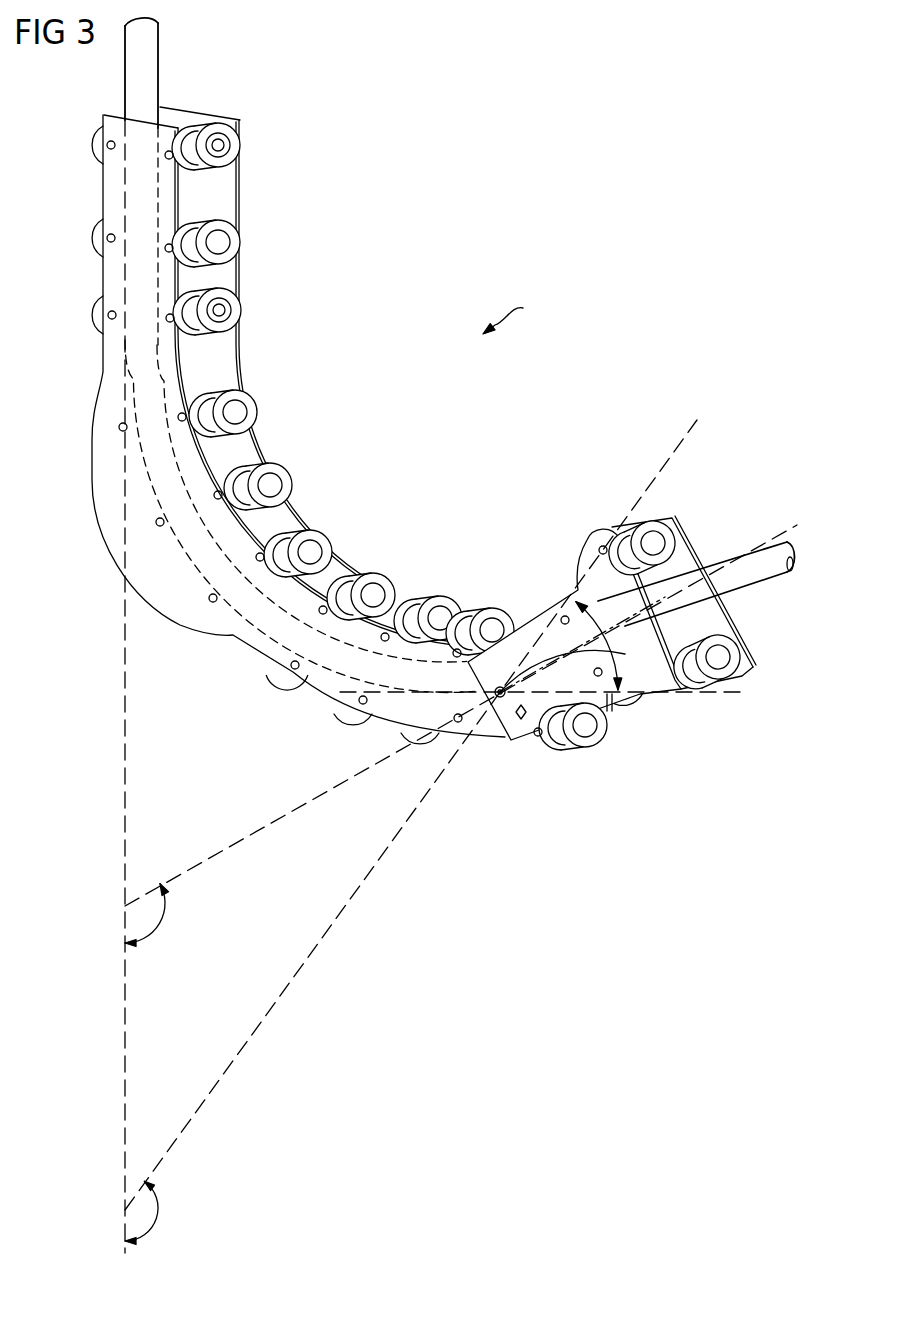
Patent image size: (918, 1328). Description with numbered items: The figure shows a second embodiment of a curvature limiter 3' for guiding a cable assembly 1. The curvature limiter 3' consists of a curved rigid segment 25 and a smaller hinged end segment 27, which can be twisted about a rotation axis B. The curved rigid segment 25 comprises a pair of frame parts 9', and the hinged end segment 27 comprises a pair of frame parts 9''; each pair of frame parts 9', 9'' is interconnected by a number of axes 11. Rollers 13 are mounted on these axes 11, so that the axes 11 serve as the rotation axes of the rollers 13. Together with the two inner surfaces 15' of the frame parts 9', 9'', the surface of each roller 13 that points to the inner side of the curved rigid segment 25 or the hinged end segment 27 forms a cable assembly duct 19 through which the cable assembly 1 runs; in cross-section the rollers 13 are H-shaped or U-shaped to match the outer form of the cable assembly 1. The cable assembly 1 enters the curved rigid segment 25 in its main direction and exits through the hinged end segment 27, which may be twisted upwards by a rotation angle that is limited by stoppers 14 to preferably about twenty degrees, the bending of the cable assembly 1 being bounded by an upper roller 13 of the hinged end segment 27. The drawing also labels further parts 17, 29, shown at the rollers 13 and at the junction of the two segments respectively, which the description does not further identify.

The cable assembly 1 is at (150, 46).
The curvature limiter 3' is at (516, 313).
The frame parts 9' is at (324, 387).
The frame parts 9'' is at (612, 628).
The axes 11 is at (107, 146).
The rollers 13 is at (226, 242).
The stoppers 14 is at (524, 744).
The inner surfaces 15' is at (273, 350).
The roller axle 17 is at (207, 140).
The cable assembly duct 19 is at (715, 603).
The curved rigid segment 25 is at (106, 432).
The hinged end segment 27 is at (549, 620).
The pivot joint 29 is at (503, 700).
The rotation axis B is at (558, 668).